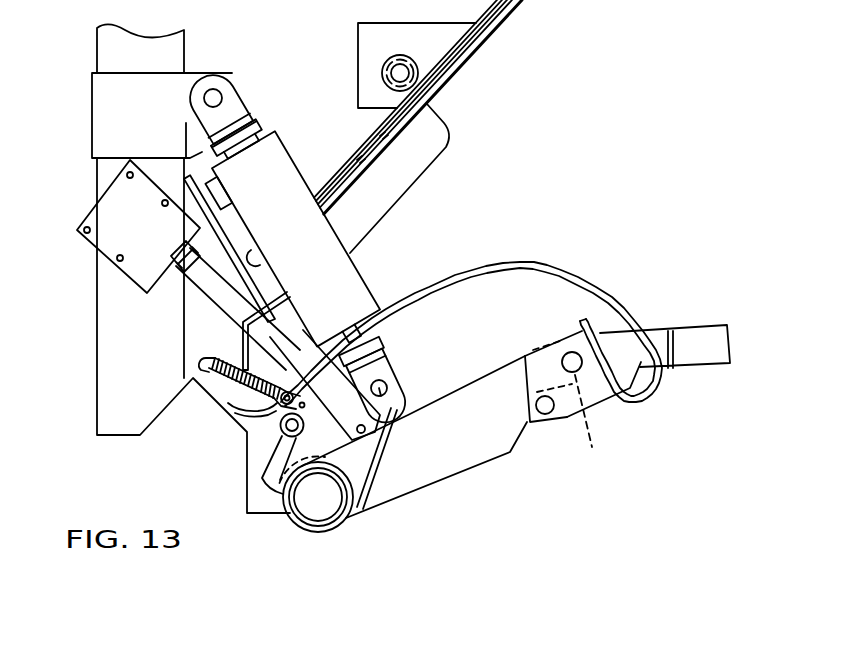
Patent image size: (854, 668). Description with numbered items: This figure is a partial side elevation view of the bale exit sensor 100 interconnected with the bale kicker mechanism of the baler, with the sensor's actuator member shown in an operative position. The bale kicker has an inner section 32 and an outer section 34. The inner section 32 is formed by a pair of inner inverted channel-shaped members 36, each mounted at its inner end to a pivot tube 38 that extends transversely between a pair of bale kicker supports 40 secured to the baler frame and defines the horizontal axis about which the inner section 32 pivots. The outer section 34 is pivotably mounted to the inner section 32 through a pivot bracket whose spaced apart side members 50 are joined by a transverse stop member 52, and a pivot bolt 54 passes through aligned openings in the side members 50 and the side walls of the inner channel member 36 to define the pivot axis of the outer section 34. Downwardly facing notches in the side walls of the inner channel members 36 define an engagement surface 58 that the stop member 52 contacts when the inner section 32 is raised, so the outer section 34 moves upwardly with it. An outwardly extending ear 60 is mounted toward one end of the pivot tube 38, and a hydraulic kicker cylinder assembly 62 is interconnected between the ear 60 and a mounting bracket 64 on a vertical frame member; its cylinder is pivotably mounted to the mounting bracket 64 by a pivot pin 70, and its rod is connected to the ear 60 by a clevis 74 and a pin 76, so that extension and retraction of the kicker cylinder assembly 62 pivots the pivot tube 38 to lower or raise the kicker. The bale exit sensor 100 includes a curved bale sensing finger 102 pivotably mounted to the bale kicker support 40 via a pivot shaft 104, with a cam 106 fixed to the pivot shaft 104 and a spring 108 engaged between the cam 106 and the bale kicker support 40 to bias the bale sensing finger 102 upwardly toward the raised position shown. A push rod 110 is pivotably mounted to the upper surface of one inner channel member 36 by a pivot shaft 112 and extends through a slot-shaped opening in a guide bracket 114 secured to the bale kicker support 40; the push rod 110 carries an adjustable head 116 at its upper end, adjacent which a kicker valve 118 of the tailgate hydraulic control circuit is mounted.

The inner section 32 is at (475, 338).
The outer section 34 is at (695, 301).
The inner inverted channel-shaped member 36 is at (429, 391).
The pivot tube 38 is at (310, 520).
The bale kicker support 40 is at (232, 421).
The side member 50 is at (610, 403).
The stop member 52 is at (546, 414).
The pivot bolt 54 is at (576, 372).
The engagement surface 58 is at (577, 424).
The ear 60 is at (368, 490).
The kicker cylinder assembly 62 is at (306, 140).
The mounting bracket 64 is at (195, 72).
The pivot pin 70 is at (223, 98).
The clevis 74 is at (382, 324).
The pin 76 is at (388, 405).
The bale exit sensor 100 is at (474, 208).
The bale sensing finger 102 is at (600, 287).
The pivot shaft 104 is at (253, 487).
The cam 106 is at (292, 335).
The spring 108 is at (223, 385).
The push rod 110 is at (198, 295).
The pivot shaft 112 is at (384, 396).
The guide bracket 114 is at (240, 343).
The head 116 is at (193, 245).
The kicker valve 118 is at (82, 200).